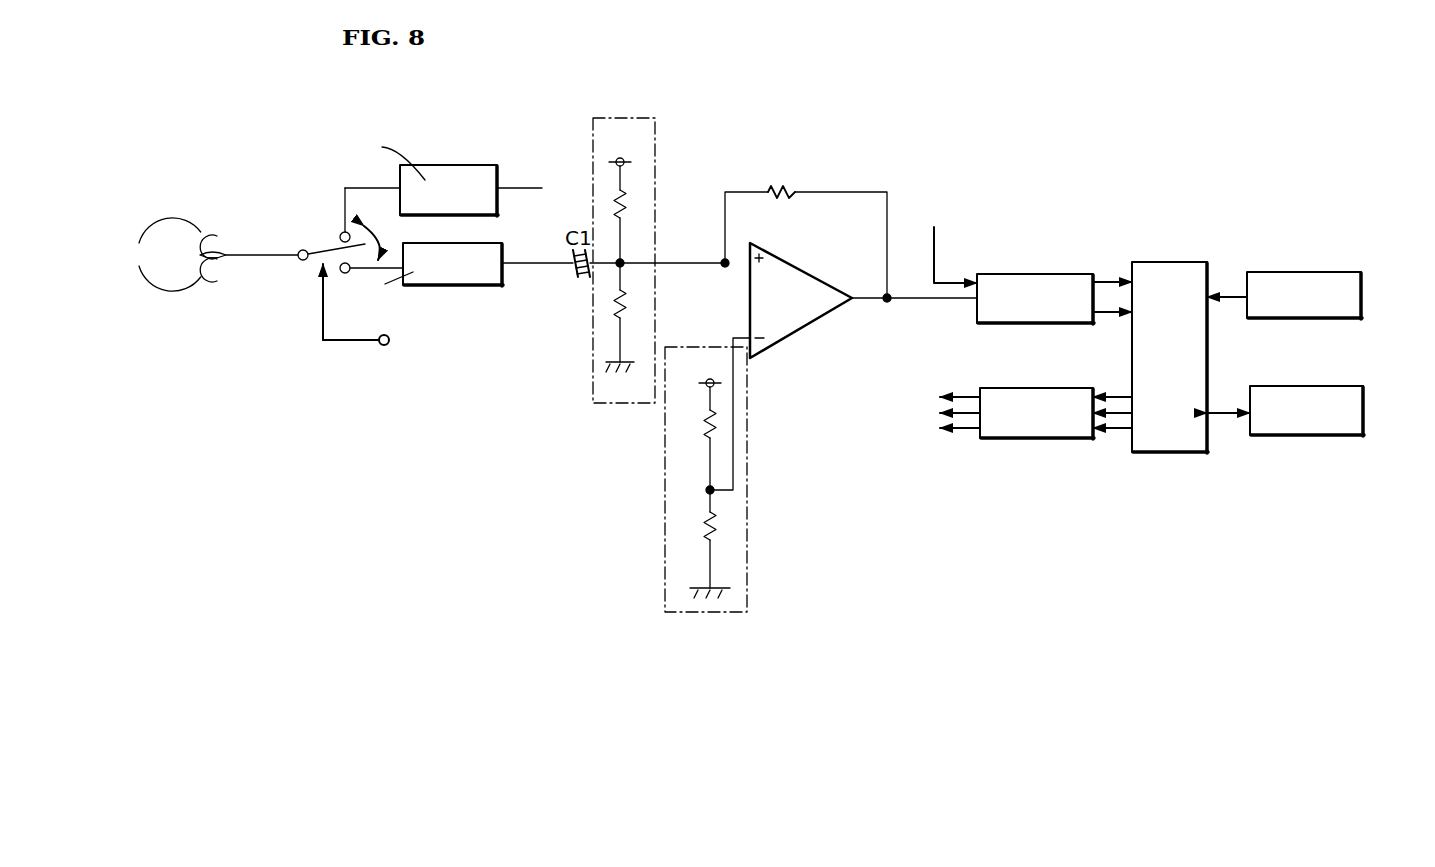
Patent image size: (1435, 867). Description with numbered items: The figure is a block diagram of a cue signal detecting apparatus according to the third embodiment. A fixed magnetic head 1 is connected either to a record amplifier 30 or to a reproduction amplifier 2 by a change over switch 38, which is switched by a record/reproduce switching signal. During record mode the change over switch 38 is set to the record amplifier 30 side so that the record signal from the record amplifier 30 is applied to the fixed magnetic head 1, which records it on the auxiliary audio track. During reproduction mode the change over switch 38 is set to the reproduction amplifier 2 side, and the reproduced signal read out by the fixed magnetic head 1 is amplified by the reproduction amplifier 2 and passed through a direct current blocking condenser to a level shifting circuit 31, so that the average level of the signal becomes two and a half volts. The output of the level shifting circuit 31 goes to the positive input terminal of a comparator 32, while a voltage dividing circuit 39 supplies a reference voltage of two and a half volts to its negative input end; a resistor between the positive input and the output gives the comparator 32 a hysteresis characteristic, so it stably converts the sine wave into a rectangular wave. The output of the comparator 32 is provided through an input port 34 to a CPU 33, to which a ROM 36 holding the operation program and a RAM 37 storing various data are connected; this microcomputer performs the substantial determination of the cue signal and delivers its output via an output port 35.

The fixed magnetic head 1 is at (160, 257).
The change over switch 38 is at (328, 247).
The record amplifier 30 is at (472, 161).
The reproduction amplifier 2 is at (482, 243).
The level shifting circuit 31 is at (640, 118).
The comparator 32 is at (778, 303).
The voltage dividing circuit 39 is at (747, 502).
The input port 34 is at (1040, 274).
The CPU 33 is at (1170, 262).
The output port 35 is at (1040, 438).
The ROM 36 is at (1361, 290).
The RAM 37 is at (1363, 405).